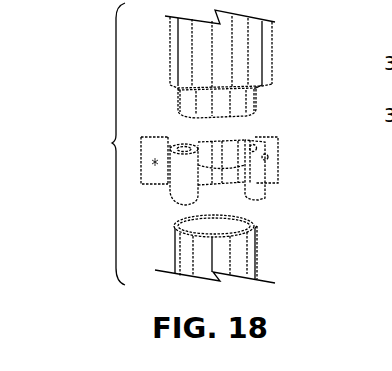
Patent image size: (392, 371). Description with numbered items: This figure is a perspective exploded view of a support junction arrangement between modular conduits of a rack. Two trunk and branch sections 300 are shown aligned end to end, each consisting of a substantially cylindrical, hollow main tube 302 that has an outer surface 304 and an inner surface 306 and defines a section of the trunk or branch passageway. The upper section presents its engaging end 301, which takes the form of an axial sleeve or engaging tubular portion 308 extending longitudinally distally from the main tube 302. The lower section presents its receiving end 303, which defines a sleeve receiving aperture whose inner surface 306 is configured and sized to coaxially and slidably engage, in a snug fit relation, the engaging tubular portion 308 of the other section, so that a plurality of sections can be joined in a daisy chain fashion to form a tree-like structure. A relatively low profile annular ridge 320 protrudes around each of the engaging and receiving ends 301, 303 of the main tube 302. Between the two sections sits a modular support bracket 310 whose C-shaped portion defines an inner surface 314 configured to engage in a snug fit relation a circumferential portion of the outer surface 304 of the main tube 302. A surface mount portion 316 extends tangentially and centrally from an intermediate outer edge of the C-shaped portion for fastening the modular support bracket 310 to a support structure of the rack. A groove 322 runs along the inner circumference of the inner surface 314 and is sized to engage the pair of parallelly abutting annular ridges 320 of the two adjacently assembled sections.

The trunk and branch section 300 is at (199, 154).
The engaging end 301 is at (250, 113).
The main tube 302 is at (178, 36).
The receiving end 303 is at (218, 223).
The outer surface 304 is at (225, 32).
The inner surface 306 is at (180, 223).
The engaging tubular portion 308 is at (250, 100).
The modular support bracket 310 is at (203, 157).
The inner surface 314 is at (198, 150).
The surface mount portion 316 is at (147, 143).
The annular ridge 320 is at (257, 84).
The groove 322 is at (228, 158).